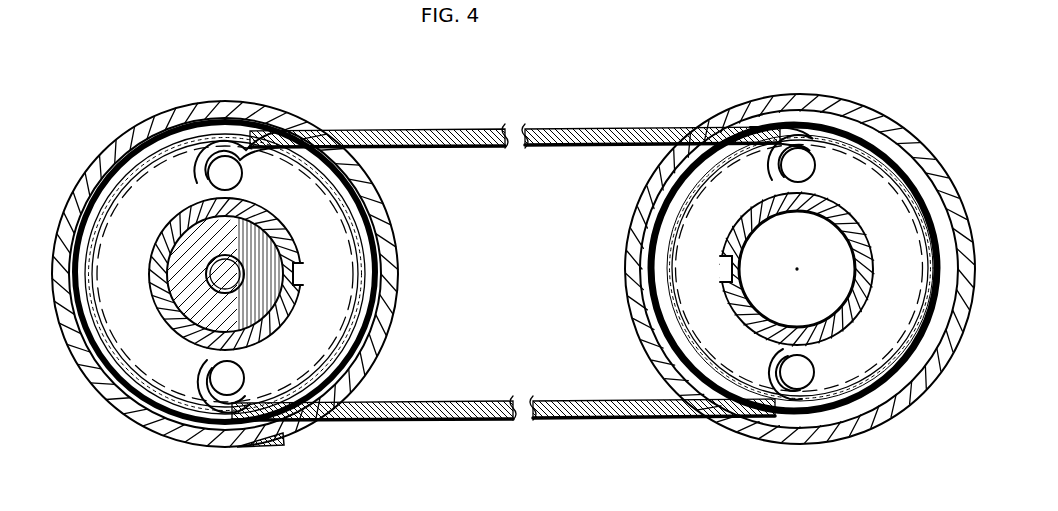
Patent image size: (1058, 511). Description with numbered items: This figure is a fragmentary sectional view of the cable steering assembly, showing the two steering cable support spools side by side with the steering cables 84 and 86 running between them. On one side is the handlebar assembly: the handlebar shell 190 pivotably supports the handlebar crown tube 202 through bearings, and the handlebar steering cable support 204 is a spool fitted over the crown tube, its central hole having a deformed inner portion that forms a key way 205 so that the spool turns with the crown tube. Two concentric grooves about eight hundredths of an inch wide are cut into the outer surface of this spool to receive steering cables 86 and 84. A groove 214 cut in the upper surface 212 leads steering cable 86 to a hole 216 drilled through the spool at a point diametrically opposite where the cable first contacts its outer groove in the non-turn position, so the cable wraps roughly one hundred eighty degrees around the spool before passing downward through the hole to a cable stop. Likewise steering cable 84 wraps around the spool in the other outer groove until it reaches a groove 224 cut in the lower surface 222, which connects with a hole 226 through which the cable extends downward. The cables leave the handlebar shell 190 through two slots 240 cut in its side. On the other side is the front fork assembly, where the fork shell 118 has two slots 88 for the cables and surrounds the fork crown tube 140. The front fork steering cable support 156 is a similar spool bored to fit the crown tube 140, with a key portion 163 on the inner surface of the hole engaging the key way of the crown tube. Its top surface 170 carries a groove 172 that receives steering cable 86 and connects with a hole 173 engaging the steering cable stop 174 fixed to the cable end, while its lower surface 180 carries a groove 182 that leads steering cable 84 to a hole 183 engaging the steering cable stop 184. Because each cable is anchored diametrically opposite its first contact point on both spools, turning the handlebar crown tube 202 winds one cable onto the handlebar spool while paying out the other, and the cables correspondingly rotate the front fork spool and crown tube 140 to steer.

The steering cable 84 is at (415, 130).
The steering cable 86 is at (90, 243).
The slots 88 is at (720, 428).
The fork shell 118 is at (680, 148).
The crown tube 140 is at (735, 200).
The front fork steering cable support 156 is at (660, 232).
The key portion 163 is at (725, 264).
The top surface 170 is at (906, 380).
The groove 172 is at (805, 150).
The hole 173 is at (735, 125).
The steering cable stop 174 is at (792, 150).
The lower surface 180 is at (700, 326).
The groove 182 is at (853, 408).
The hole 183 is at (760, 405).
The steering cable stop 184 is at (806, 415).
The handlebar shell 190 is at (352, 298).
The handlebar crown tube 202 is at (292, 305).
The handlebar steering cable support 204 is at (350, 222).
The key way 205 is at (300, 274).
The upper surface 212 is at (325, 215).
The groove 214 is at (235, 152).
The hole 216 is at (232, 157).
The lower surface 222 is at (112, 420).
The groove 224 is at (185, 445).
The hole 226 is at (238, 397).
The slots 240 is at (286, 106).